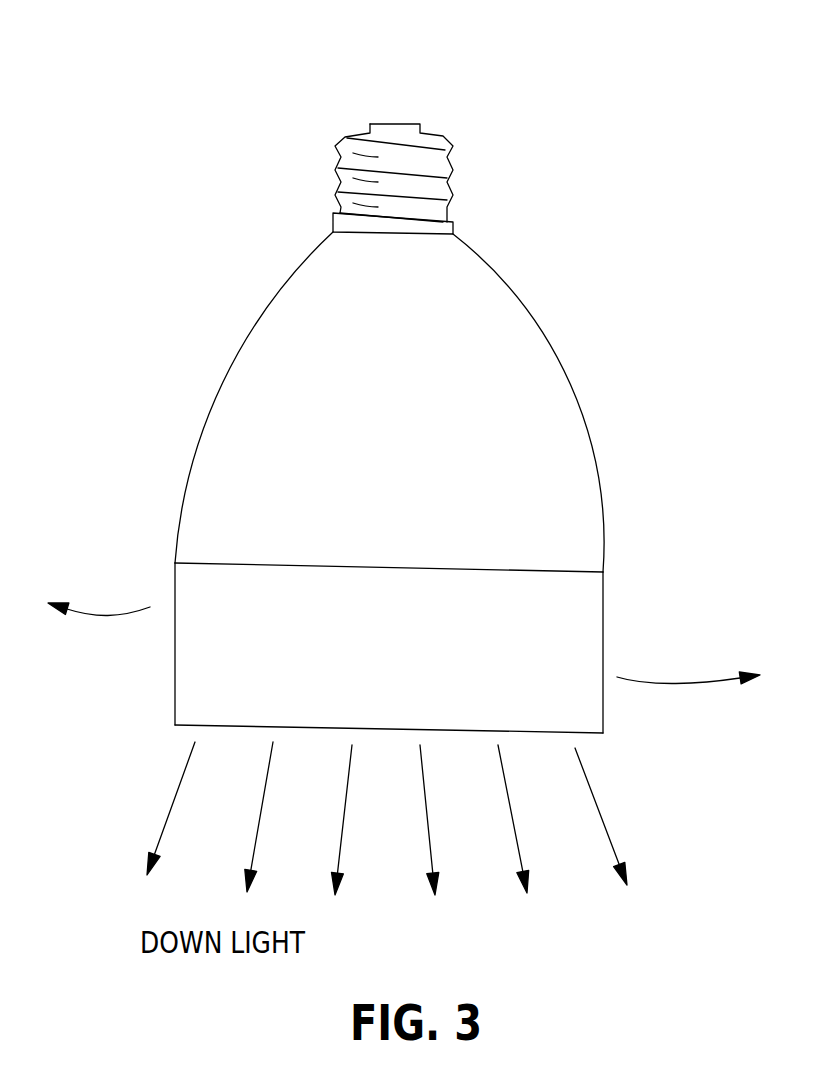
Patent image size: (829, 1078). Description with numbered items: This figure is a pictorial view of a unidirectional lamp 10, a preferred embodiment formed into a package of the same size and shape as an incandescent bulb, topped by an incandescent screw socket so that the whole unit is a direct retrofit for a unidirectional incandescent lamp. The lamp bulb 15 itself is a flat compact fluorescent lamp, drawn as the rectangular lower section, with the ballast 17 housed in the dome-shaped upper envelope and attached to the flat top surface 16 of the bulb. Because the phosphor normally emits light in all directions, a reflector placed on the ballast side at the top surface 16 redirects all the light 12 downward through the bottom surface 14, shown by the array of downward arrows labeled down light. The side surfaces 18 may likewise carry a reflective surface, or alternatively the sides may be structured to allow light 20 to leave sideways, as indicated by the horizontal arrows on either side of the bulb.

The unidirectional lamp 10 is at (398, 118).
The light 12 is at (605, 827).
The bottom surface 14 is at (560, 735).
The lamp bulb 15 is at (384, 665).
The top surface 16 is at (538, 570).
The ballast 17 is at (390, 402).
The side surfaces 18 is at (605, 632).
The light 20 is at (108, 618).